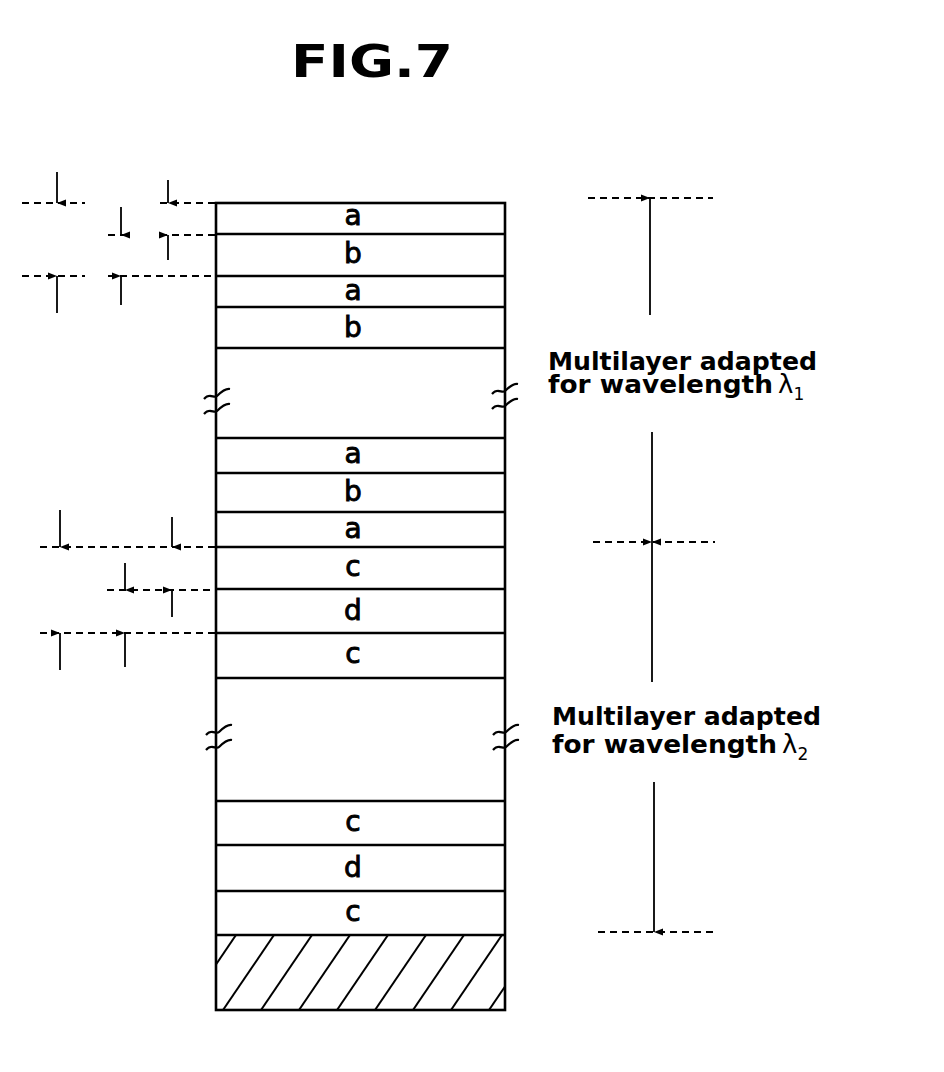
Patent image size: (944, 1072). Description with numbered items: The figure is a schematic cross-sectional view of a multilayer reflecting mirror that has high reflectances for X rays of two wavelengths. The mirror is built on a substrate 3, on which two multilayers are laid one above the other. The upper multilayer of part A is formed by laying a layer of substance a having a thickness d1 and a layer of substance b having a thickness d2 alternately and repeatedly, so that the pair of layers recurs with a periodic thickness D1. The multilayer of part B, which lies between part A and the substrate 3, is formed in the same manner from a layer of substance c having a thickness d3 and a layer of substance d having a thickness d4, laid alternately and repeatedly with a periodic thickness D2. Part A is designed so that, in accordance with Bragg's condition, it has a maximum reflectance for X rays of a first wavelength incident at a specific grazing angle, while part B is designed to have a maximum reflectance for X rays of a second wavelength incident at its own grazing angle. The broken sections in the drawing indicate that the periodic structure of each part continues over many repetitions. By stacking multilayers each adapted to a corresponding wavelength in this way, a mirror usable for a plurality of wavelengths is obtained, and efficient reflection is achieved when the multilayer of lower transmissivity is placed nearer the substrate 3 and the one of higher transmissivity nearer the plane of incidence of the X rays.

The substrate 3 is at (505, 955).
The multilayer of part A is at (651, 370).
The multilayer of part B is at (657, 737).
The periodic thickness of part A D1 is at (53, 242).
The periodic thickness of part B D2 is at (128, 590).
The thickness of the layer of substance a d1 is at (187, 220).
The thickness of the layer of substance b d2 is at (162, 256).
The thickness of the layer of substance c d3 is at (161, 567).
The thickness of the layer of substance d d4 is at (122, 615).